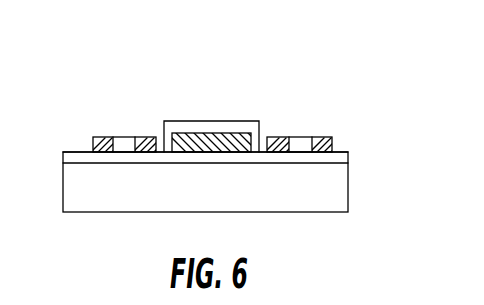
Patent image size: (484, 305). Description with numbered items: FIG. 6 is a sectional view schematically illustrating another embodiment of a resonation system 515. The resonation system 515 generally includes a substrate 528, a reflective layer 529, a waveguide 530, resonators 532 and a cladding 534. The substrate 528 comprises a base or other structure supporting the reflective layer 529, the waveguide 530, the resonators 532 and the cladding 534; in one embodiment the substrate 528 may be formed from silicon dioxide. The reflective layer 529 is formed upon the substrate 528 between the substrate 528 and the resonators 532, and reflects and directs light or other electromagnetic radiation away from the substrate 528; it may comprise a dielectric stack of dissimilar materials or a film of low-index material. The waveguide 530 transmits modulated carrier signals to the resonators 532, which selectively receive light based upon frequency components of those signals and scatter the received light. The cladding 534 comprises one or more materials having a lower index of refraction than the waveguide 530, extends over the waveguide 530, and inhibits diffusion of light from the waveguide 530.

The resonation system 515 is at (133, 101).
The substrate 528 is at (349, 182).
The reflective layer 529 is at (341, 151).
The waveguide 530 is at (230, 138).
The resonators 532 is at (92, 146).
The cladding 534 is at (192, 126).